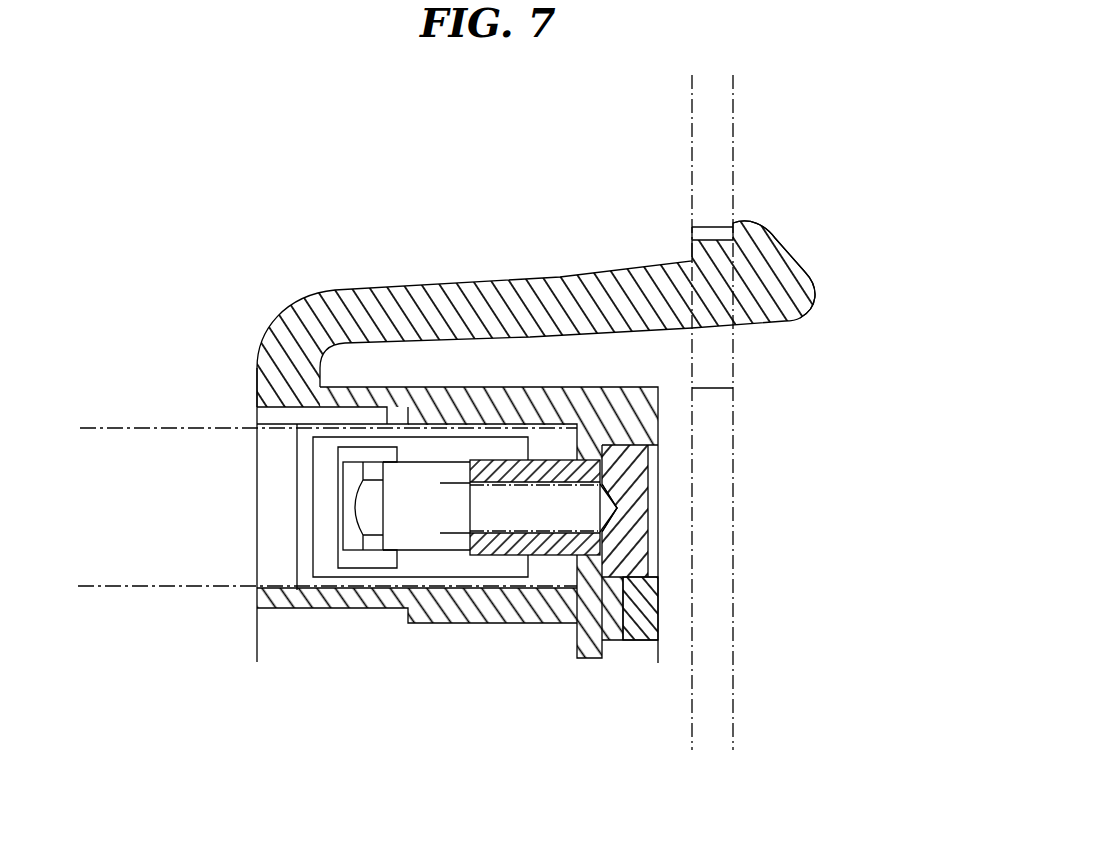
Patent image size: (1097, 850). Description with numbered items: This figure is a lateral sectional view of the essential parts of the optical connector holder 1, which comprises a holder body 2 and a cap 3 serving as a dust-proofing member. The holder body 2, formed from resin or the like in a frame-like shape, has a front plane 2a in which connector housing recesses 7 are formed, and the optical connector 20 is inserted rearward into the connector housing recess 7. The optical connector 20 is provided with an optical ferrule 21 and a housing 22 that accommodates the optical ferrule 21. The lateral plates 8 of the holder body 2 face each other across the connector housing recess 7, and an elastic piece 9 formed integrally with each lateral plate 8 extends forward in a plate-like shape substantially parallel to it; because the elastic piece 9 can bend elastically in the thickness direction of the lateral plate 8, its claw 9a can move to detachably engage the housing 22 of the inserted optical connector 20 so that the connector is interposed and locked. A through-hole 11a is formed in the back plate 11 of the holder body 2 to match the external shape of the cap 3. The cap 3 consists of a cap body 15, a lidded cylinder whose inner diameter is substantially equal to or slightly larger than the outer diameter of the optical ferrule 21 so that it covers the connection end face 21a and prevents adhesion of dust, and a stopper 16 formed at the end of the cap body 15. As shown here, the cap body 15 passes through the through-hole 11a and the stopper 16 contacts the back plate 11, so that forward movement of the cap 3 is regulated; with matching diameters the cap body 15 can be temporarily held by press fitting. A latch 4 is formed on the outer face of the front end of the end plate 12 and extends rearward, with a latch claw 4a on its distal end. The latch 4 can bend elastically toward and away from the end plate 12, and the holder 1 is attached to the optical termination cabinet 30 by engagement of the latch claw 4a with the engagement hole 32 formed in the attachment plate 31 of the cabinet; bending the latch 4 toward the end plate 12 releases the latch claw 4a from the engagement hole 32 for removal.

The optical connector holder 1 is at (342, 238).
The holder body 2 is at (658, 610).
The front plane 2a is at (257, 645).
The cap 3 is at (620, 743).
The latch 4 is at (509, 280).
The latch claw 4a is at (740, 225).
The connector housing recess 7 is at (272, 493).
The lateral plate 8 is at (272, 527).
The elastic piece 9 is at (425, 540).
The claw 9a is at (373, 547).
The back plate 11 is at (605, 460).
The through-hole 11a is at (598, 493).
The end plate 12 is at (530, 386).
The cap body 15 is at (548, 563).
The stopper 16 is at (622, 578).
The optical connector 20 is at (187, 428).
The optical ferrule 21 is at (620, 490).
The connection end face 21a is at (617, 516).
The housing 22 is at (190, 588).
The optical termination cabinet 30 is at (762, 128).
The attachment plate 31 is at (733, 188).
The engagement hole 32 is at (715, 388).